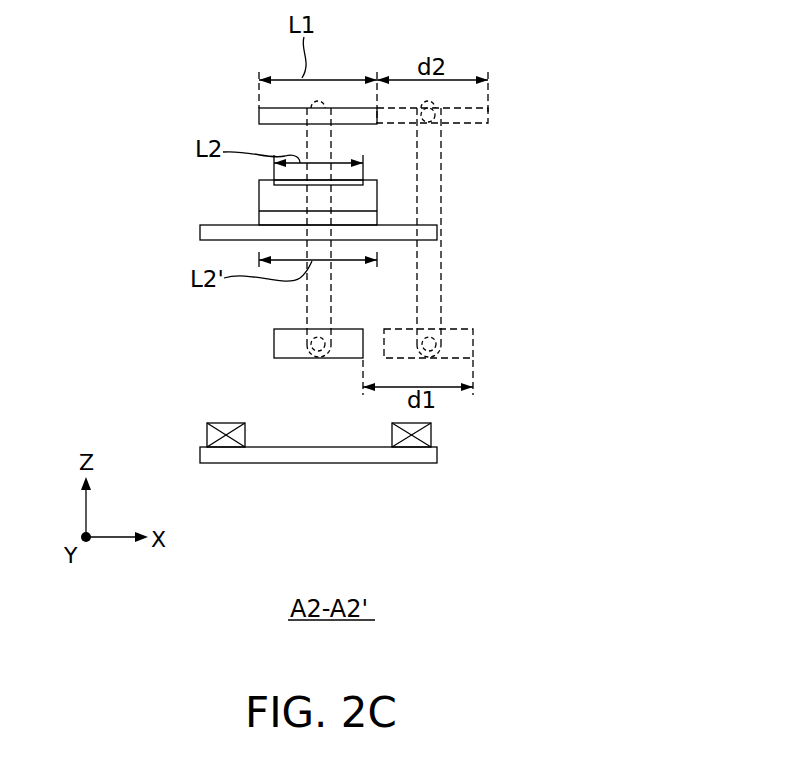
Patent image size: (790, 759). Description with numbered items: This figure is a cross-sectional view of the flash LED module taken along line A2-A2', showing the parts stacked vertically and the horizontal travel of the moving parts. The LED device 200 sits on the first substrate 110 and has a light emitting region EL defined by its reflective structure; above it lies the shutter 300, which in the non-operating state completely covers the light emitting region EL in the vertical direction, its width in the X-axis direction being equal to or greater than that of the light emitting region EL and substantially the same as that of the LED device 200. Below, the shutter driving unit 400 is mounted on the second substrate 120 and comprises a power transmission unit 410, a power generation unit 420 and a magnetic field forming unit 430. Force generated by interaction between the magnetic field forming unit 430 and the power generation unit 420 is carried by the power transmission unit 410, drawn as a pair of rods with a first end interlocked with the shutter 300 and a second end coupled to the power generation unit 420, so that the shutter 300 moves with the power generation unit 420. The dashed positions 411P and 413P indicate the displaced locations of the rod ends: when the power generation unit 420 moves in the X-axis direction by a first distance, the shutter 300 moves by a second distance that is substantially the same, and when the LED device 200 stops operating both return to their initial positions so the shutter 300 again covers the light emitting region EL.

The shutter 300 is at (270, 115).
The LED device 200 is at (240, 181).
The light emitting region EL is at (286, 183).
The first substrate 110 is at (212, 232).
The second substrate 120 is at (417, 453).
The shutter driving unit 400 is at (130, 320).
The power transmission unit 410 is at (317, 293).
The power generation unit 420 is at (288, 343).
The magnetic field forming unit 430 is at (208, 437).
The first probe position 411P is at (436, 114).
The second probe position 413P is at (436, 342).